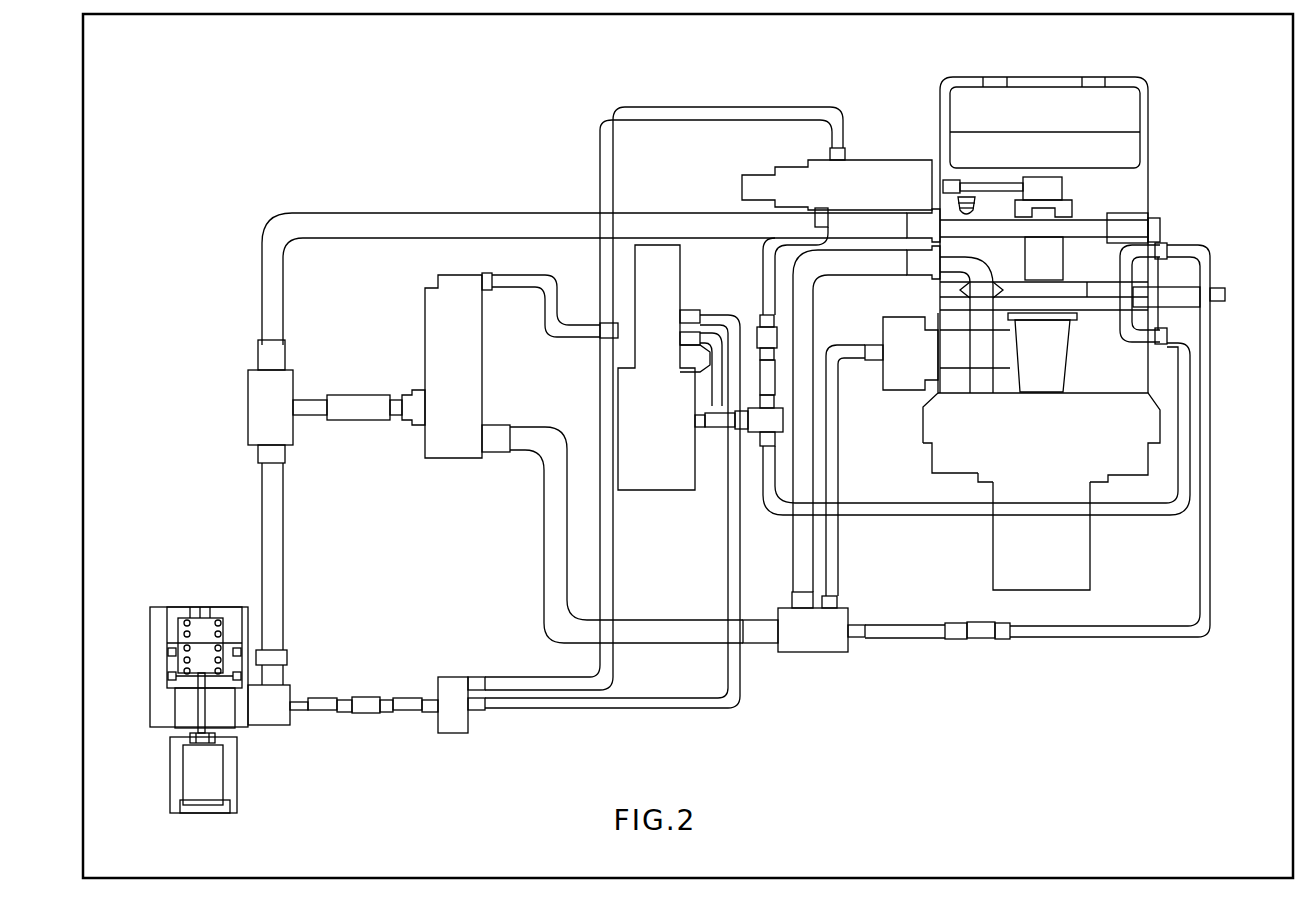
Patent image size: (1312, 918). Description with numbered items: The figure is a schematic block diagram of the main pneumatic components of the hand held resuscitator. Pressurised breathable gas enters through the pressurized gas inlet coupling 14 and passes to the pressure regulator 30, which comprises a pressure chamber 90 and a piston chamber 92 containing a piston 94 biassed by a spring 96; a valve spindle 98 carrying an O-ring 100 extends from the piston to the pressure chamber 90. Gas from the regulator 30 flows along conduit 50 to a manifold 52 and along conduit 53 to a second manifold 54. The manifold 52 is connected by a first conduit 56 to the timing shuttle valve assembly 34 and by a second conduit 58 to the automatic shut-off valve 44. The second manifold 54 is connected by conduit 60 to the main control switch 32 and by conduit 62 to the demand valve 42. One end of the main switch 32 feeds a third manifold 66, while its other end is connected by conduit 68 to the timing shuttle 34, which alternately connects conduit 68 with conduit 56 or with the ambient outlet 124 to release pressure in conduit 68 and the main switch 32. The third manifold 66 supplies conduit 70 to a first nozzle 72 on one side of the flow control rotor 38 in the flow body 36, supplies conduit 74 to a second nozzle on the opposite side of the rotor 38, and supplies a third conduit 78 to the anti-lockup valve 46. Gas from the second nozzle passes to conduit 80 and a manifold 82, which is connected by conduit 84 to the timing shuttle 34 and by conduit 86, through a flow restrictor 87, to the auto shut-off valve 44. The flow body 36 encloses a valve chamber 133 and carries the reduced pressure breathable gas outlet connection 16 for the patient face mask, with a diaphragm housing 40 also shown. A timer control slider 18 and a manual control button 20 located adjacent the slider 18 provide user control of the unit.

The pressurized gas inlet coupling 14 is at (210, 770).
The reduced pressure breathable gas outlet connection 16 is at (238, 800).
The timer control slider 18 is at (1225, 303).
The manual control button 20 is at (1158, 232).
The pressure regulator 30 is at (165, 812).
The main control switch 32 is at (445, 340).
The timing shuttle valve assembly 34 is at (640, 411).
The flow body 36 is at (1085, 375).
The flow control rotor 38 is at (1097, 253).
The diaphragm housing 40 is at (1023, 427).
The demand valve 42 is at (935, 90).
The automatic shut-off valve 44 is at (870, 178).
The anti-lockup valve 46 is at (905, 373).
The conduit 50 is at (320, 698).
The manifold 52 is at (452, 680).
The conduit 53 is at (272, 570).
The second manifold 54 is at (255, 415).
The first conduit 56 is at (660, 700).
The second conduit 58 is at (508, 680).
The conduit 60 is at (350, 412).
The conduit 62 is at (400, 228).
The third manifold 66 is at (808, 642).
The conduit 68 is at (555, 297).
The conduit 70 is at (798, 538).
The first nozzle 72 is at (988, 282).
The conduit 74 is at (905, 638).
The third conduit 78 is at (840, 548).
The conduit 80 is at (1152, 518).
The manifold 82 is at (760, 427).
The conduit 84 is at (722, 420).
The conduit 86 is at (766, 287).
The flow restrictor 87 is at (778, 333).
The pressure chamber 90 is at (188, 703).
The piston chamber 92 is at (175, 662).
The piston 94 is at (172, 647).
The spring 96 is at (186, 621).
The valve spindle 98 is at (198, 712).
The O-ring 100 is at (195, 735).
The ambient outlet 124 is at (702, 372).
The valve chamber 133 is at (957, 470).